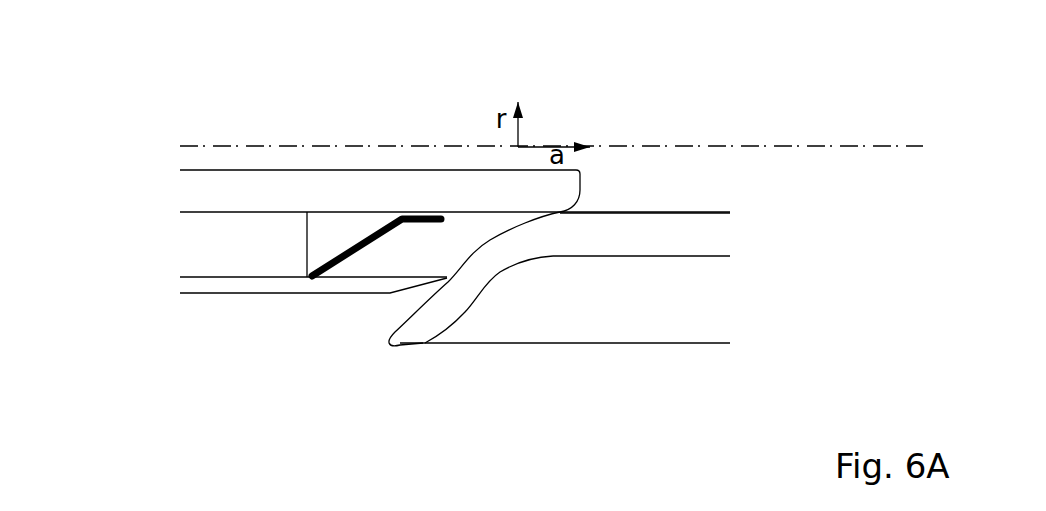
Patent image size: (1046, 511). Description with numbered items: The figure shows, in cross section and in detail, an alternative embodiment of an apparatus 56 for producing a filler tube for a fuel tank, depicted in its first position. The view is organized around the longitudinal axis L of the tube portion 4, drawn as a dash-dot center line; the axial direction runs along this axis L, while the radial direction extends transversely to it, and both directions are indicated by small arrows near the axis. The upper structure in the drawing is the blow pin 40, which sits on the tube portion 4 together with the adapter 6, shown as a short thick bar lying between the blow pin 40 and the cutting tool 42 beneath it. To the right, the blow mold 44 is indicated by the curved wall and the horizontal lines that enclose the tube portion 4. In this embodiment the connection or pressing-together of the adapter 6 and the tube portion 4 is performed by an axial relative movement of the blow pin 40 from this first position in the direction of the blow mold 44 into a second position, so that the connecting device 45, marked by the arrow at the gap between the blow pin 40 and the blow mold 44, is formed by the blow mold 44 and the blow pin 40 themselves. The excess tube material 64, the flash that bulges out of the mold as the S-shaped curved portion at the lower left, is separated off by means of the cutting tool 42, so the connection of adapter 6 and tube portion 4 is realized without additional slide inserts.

The apparatus 56 is at (163, 108).
The blow pin 40 is at (285, 232).
The cutting tool 42 is at (257, 283).
The adapter 6 is at (367, 247).
The excess tube material 64 is at (418, 330).
The blow mold 44 is at (597, 330).
The tube portion 4 is at (635, 235).
The connecting device 45 is at (620, 158).
The longitudinal axis L is at (848, 147).